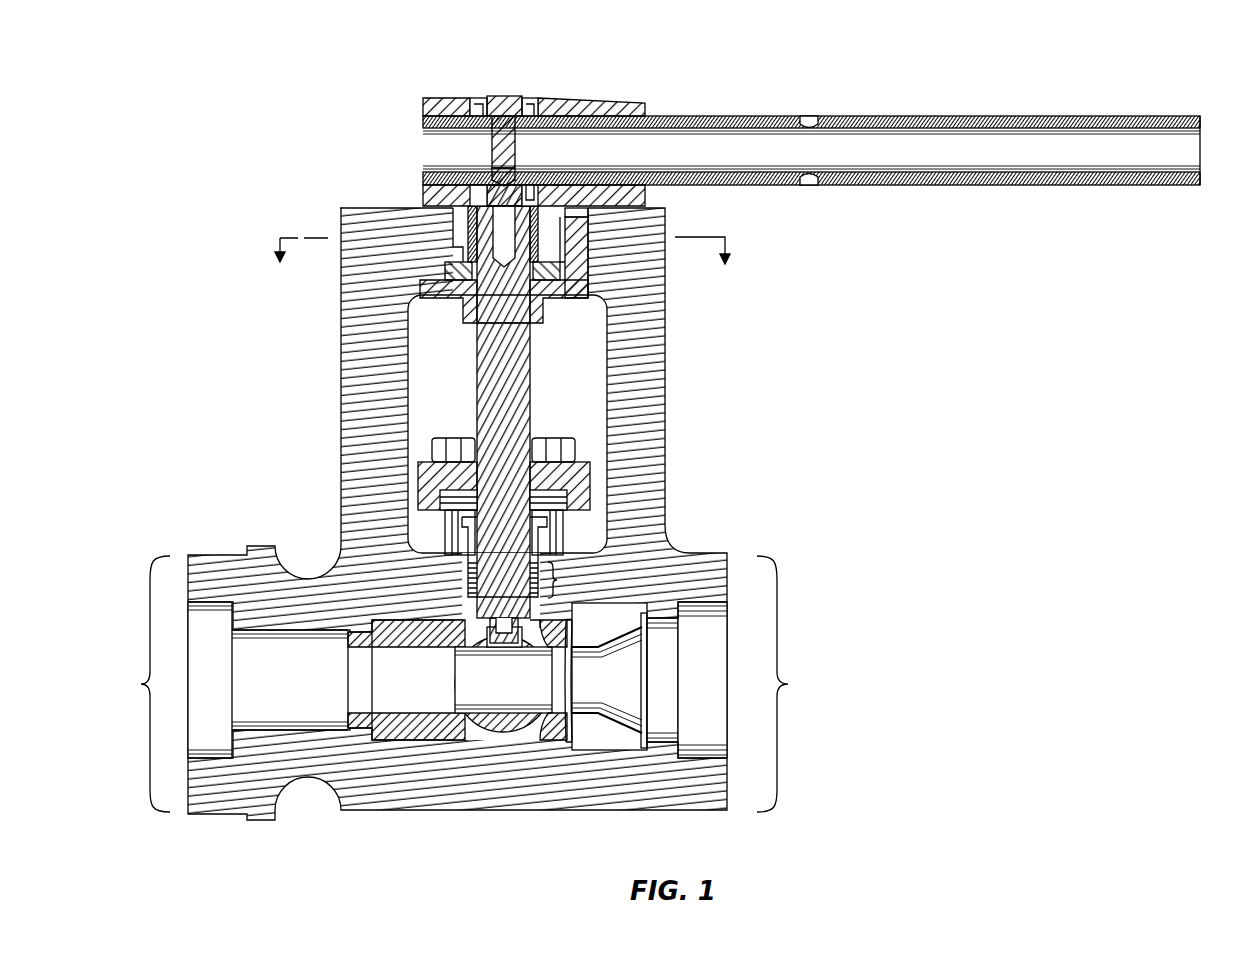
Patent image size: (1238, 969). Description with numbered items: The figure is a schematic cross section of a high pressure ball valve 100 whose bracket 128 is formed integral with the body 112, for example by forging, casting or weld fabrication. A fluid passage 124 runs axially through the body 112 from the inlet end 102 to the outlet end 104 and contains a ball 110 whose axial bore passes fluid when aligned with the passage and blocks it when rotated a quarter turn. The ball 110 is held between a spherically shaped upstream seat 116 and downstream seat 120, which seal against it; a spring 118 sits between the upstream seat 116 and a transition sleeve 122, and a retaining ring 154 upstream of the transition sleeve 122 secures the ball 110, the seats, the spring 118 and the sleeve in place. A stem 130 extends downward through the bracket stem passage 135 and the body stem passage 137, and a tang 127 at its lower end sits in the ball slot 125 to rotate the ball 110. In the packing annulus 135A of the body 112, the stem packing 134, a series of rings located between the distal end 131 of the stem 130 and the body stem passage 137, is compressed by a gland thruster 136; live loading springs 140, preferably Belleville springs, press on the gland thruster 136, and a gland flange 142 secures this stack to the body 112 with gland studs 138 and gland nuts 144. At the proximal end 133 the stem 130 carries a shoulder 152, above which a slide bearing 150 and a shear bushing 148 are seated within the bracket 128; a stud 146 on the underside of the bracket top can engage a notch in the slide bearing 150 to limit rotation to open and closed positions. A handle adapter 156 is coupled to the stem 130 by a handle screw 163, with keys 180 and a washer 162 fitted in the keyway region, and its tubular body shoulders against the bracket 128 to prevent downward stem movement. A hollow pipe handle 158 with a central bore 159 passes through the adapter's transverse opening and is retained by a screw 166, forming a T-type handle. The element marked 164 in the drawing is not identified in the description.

The ball valve 100 is at (268, 66).
The inlet end 102 is at (704, 684).
The outlet end 104 is at (282, 684).
The ball 110 is at (495, 705).
The body 112 is at (195, 548).
The upstream seat 116 is at (553, 745).
The spring 118 is at (570, 745).
The downstream seat 120 is at (405, 740).
The transition sleeve 122 is at (600, 735).
The fluid passage 124 is at (267, 692).
The ball slot 125 is at (460, 670).
The tang 127 is at (490, 625).
The bracket 128 is at (340, 208).
The stem 130 is at (502, 414).
The distal end 131 is at (510, 530).
The proximal end 133 is at (497, 318).
The stem packing 134 is at (562, 580).
The bracket stem passage 135 is at (445, 268).
The packing annulus 135A is at (470, 580).
The gland thruster 136 is at (563, 520).
The body stem passage 137 is at (540, 622).
The gland studs 138 is at (450, 530).
The live loading springs 140 is at (562, 500).
The gland flange 142 is at (430, 475).
The gland nuts 144 is at (472, 440).
The stud 146 is at (590, 250).
The shear bushing 148 is at (575, 262).
The slide bearing 150 is at (552, 310).
The shoulder 152 is at (440, 300).
The retaining ring 154 is at (647, 745).
The handle adapter 156 is at (765, 133).
The handle 158 is at (1104, 117).
The bore 159 is at (815, 117).
The washer 162 is at (468, 228).
The handle screw 163 is at (500, 172).
The clamp pins 164 is at (478, 98).
The screw 166 is at (508, 96).
The keys 180 is at (540, 205).